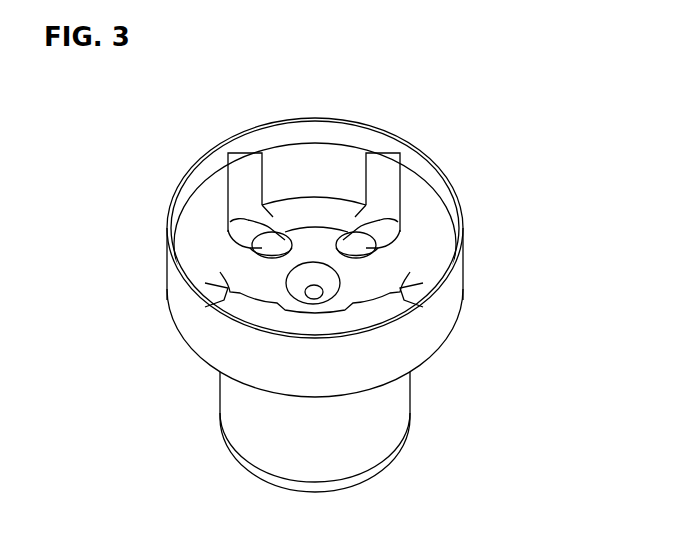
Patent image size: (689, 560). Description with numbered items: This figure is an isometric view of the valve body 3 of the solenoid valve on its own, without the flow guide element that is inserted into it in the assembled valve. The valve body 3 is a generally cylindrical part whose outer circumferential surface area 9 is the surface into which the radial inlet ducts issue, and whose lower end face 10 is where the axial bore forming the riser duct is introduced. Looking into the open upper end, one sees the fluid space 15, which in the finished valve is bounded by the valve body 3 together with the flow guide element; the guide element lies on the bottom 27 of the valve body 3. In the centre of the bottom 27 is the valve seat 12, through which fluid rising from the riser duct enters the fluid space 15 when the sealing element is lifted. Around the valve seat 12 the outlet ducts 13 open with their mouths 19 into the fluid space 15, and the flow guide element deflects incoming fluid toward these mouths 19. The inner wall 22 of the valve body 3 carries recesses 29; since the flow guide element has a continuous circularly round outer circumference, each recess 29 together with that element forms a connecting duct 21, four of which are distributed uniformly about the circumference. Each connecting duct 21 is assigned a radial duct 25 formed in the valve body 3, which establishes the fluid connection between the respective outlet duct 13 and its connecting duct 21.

The valve body 3 is at (440, 225).
The surface area 9 is at (411, 394).
The end face 10 is at (286, 489).
The valve seat 12 is at (333, 285).
The outlet duct 13 is at (336, 242).
The fluid space 15 is at (240, 272).
The mouth 19 is at (285, 230).
The connecting duct 21 is at (325, 228).
The inner wall 22 is at (217, 199).
The radial duct 25 is at (245, 222).
The bottom 27 is at (323, 204).
The recess 29 is at (247, 172).